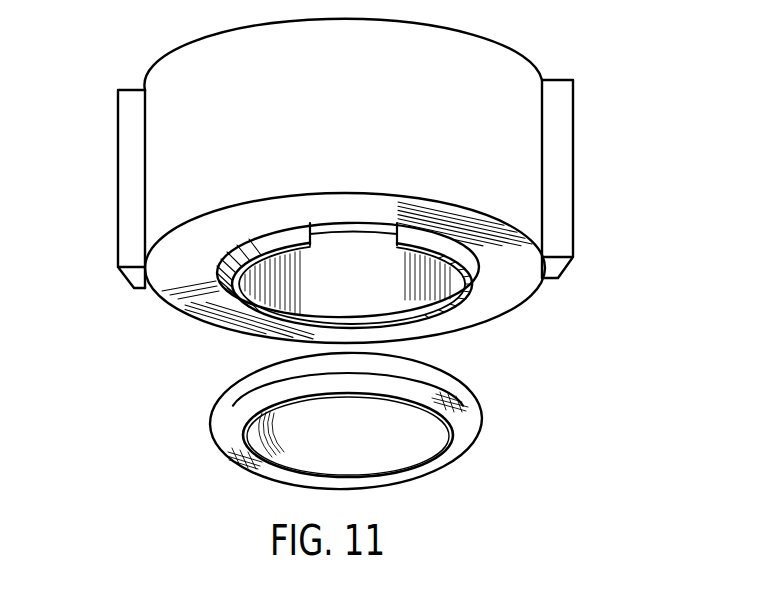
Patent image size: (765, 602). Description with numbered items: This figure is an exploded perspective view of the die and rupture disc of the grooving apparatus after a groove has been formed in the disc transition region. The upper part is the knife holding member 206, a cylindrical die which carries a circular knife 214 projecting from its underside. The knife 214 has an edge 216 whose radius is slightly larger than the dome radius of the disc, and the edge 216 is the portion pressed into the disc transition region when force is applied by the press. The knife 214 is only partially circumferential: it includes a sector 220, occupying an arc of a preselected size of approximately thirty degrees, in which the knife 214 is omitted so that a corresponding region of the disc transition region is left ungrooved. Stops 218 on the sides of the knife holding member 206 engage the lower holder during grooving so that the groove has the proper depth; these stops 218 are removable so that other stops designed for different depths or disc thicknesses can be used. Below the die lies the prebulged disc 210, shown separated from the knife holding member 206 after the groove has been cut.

The knife holding member 206 is at (425, 147).
The prebulged disc 210 is at (445, 406).
The circular knife 214 is at (473, 270).
The knife edge 216 is at (448, 317).
The stops 218 is at (127, 182).
The sector 220 is at (338, 223).